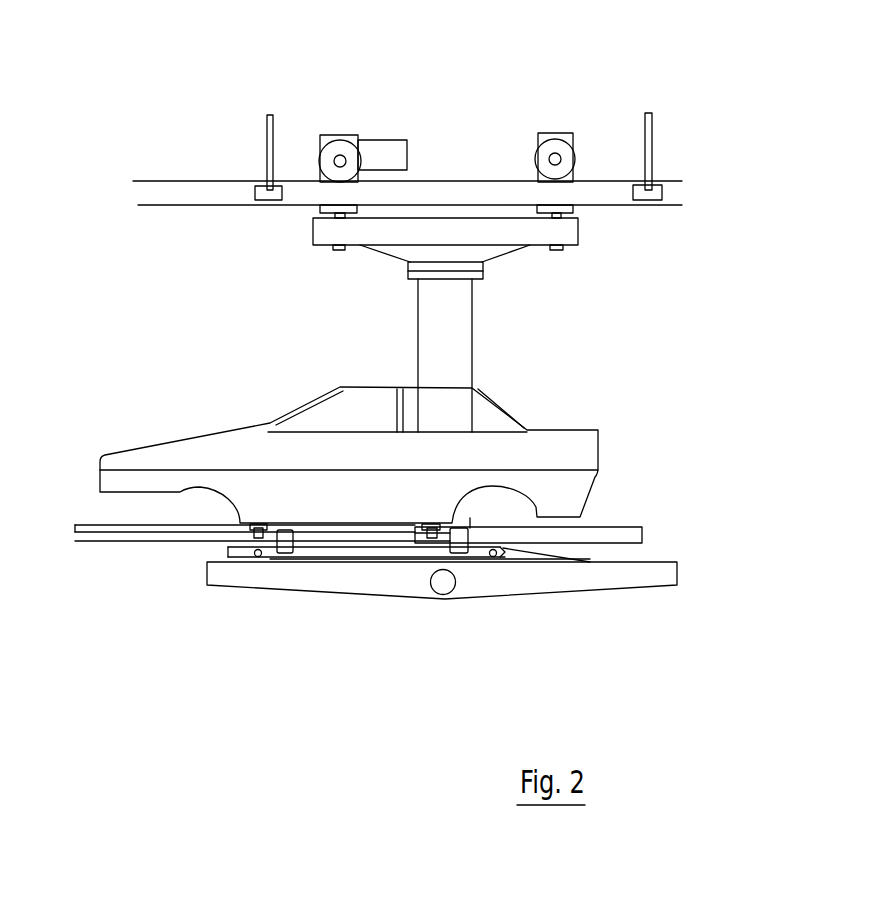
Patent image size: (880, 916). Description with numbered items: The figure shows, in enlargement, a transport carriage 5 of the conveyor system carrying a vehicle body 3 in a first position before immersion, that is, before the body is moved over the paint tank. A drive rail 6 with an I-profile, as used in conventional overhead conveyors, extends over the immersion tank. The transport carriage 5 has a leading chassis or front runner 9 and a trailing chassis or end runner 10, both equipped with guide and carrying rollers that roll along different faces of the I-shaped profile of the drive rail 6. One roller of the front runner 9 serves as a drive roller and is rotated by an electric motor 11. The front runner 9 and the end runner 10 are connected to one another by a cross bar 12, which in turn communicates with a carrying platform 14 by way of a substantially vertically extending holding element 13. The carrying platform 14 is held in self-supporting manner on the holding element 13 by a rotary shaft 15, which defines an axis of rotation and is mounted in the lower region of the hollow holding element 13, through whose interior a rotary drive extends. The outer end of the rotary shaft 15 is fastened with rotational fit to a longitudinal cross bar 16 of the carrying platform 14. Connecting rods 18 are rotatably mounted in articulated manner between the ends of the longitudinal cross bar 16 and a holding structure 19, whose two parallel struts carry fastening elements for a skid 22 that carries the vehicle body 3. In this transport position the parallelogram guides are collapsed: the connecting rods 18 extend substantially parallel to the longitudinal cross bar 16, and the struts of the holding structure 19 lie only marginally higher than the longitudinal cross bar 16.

The vehicle body 3 is at (237, 448).
The transport carriage 5 is at (452, 228).
The drive rail 6 is at (183, 195).
The chassis (front runner) 9 is at (333, 135).
The chassis (end runner) 10 is at (557, 133).
The electric motor 11 is at (380, 153).
The cross bar 12 is at (498, 232).
The holding element 13 is at (452, 337).
The carrying platform 14 is at (332, 568).
The rotary shaft 15 is at (443, 585).
The longitudinal cross bar 16 is at (535, 572).
The connecting rod 18 is at (553, 558).
The holding structure 19 is at (382, 550).
The skid 22 is at (610, 537).